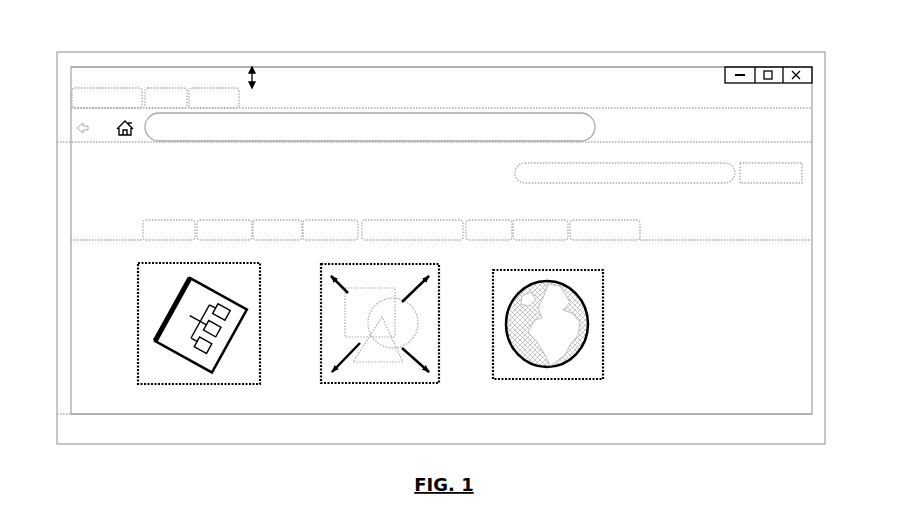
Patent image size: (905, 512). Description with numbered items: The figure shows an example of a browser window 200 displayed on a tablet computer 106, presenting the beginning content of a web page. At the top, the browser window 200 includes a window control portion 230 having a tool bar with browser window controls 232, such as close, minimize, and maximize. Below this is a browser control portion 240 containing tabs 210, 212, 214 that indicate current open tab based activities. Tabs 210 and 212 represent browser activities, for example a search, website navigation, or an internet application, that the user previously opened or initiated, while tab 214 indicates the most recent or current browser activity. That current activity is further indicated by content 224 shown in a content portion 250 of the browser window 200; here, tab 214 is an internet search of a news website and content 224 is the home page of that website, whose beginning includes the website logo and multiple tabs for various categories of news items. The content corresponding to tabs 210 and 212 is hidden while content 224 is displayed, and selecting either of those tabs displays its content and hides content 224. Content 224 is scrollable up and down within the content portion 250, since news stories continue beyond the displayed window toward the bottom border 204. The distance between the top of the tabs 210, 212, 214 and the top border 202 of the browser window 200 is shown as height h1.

The tablet computer 106 is at (699, 445).
The browser window 200 is at (644, 415).
The top border 202 is at (512, 66).
The bottom border 204 is at (123, 416).
The tab 210 is at (114, 87).
The tab 212 is at (165, 87).
The tab 214 is at (213, 87).
The content 224 is at (795, 272).
The window control portion 230 is at (711, 82).
The browser window controls 232 is at (768, 66).
The browser control portion 240 is at (409, 82).
The content portion 250 is at (57, 146).
The height h1 is at (258, 86).